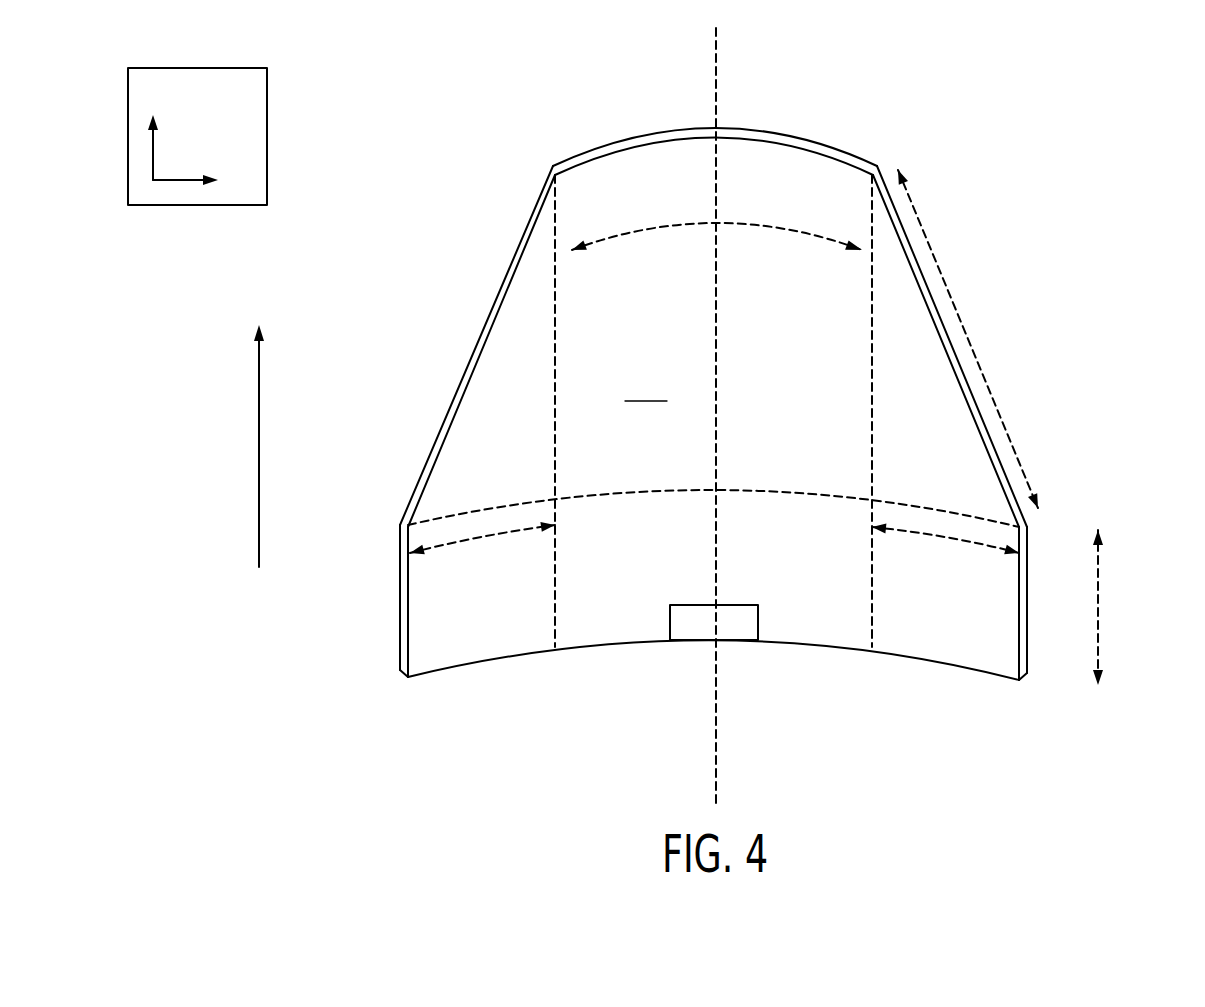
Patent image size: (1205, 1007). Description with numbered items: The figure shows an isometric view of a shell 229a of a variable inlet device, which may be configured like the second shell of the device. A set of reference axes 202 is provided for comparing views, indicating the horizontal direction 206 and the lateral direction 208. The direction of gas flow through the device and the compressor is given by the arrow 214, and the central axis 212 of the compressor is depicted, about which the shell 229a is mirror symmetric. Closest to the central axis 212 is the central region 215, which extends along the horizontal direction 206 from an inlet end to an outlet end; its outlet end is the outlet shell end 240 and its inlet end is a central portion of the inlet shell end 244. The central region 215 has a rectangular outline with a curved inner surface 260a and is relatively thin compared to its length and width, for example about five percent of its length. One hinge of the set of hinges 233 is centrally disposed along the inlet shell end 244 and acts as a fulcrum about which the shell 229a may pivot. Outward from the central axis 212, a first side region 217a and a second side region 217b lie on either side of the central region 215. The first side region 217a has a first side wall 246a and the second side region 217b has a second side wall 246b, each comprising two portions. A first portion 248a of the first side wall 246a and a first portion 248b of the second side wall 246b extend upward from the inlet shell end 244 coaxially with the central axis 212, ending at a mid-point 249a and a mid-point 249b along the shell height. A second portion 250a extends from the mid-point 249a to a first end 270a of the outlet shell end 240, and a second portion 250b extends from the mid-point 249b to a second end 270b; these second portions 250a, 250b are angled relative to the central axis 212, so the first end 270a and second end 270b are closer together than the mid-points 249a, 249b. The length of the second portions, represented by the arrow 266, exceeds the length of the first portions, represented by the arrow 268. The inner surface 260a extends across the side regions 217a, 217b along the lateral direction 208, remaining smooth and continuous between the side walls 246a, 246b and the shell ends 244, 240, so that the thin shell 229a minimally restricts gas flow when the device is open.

The set of reference axes 202 is at (219, 123).
The horizontal direction 206 is at (155, 145).
The lateral direction 208 is at (183, 178).
The central axis 212 is at (716, 722).
The arrow 214 is at (259, 460).
The central region 215 is at (772, 228).
The first side region 217a is at (477, 537).
The second side region 217b is at (953, 538).
The shell 229a is at (744, 415).
The set of hinges 233 is at (670, 622).
The outlet shell end 240 is at (682, 137).
The inlet shell end 244 is at (818, 647).
The first side wall 246a is at (433, 346).
The second side wall 246b is at (958, 346).
The first portion of the first side wall 248a is at (404, 605).
The first portion of the second side wall 248b is at (1023, 585).
The mid-point of the first side wall 249a is at (400, 525).
The mid-point of the second side wall 249b is at (1027, 527).
The second portion of the first side wall 250a is at (477, 350).
The second portion of the second side wall 250b is at (980, 425).
The inner surface 260a is at (646, 389).
The arrow 266 is at (985, 378).
The arrow 268 is at (1098, 563).
The first end of the outlet shell end 270a is at (553, 166).
The second end of the outlet shell end 270b is at (877, 166).